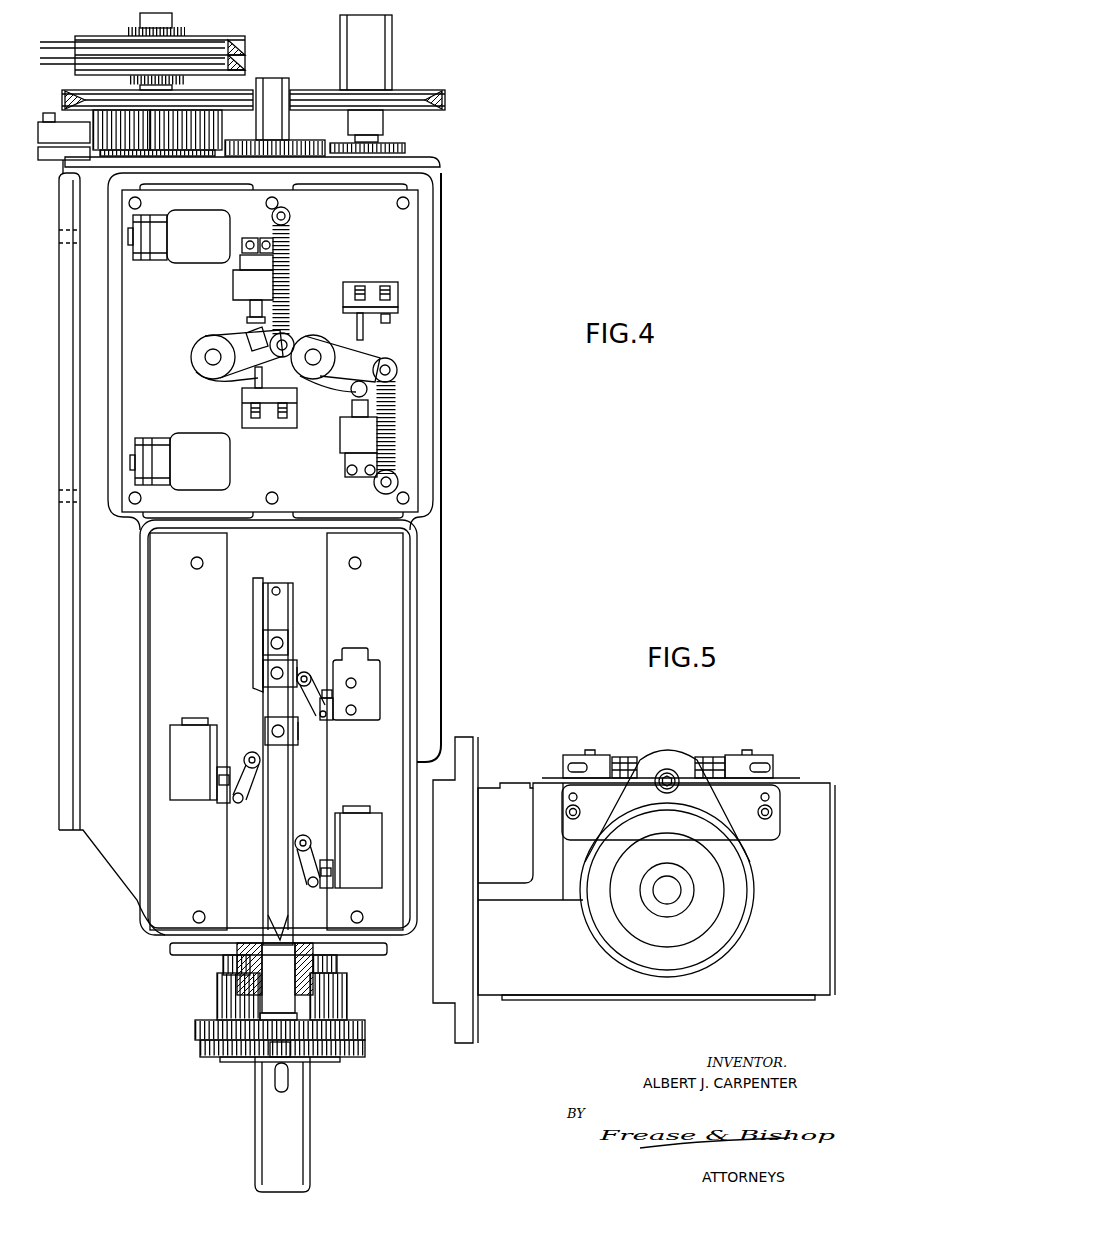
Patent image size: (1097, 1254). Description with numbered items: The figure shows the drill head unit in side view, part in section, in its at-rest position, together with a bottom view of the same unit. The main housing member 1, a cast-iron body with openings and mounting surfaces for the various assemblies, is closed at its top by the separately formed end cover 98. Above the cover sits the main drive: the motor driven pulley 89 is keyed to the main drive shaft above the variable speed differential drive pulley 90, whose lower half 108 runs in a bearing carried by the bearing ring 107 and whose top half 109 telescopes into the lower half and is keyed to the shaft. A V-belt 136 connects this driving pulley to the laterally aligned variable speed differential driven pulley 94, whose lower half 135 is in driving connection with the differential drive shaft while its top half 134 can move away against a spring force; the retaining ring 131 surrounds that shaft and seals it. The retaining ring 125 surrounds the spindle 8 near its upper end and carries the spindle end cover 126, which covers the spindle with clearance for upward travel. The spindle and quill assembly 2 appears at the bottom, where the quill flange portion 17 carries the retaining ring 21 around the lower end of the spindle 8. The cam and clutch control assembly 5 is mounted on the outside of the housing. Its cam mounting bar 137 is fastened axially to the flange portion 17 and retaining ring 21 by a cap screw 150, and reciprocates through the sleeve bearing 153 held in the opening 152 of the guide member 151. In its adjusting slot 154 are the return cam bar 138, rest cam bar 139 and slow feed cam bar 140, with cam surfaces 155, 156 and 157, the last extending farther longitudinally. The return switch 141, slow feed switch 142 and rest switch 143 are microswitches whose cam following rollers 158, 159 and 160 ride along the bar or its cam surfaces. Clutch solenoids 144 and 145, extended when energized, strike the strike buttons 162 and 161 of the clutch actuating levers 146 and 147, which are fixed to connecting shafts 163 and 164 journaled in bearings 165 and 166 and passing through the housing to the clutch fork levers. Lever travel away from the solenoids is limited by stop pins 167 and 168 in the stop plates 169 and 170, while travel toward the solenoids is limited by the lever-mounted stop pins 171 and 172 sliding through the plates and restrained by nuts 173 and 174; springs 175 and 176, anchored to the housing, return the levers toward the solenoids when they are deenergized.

In FIG. 4, the main housing member 1 is at (450, 296).
In FIG. 5, the main housing member 1 is at (568, 1004).
In FIG. 4, the spindle and quill assembly 2 is at (373, 1043).
In FIG. 4, the cam and clutch control assembly 5 is at (395, 545).
In FIG. 5, the cam and clutch control assembly 5 is at (621, 752).
In FIG. 4, the spindle 8 is at (300, 1110).
In FIG. 4, the flange portion 17 is at (365, 1028).
In FIG. 5, the flange portion 17 is at (750, 920).
In FIG. 4, the retaining ring 21 is at (202, 1047).
In FIG. 5, the retaining ring 21 is at (687, 963).
In FIG. 4, the motor driven pulley 89 is at (212, 36).
In FIG. 4, the variable speed differential drive pulley 90 is at (62, 100).
In FIG. 4, the variable speed differential driven pulley 94 is at (448, 80).
In FIG. 4, the end cover 98 is at (432, 160).
In FIG. 4, the bearing ring 107 is at (161, 133).
In FIG. 4, the lower half of the variable speed differential driving pulley 108 is at (125, 108).
In FIG. 4, the top half of driving pulley 109 is at (125, 100).
In FIG. 4, the retaining ring 125 is at (292, 146).
In FIG. 4, the spindle end cover 126 is at (271, 82).
In FIG. 4, the retaining ring 131 is at (405, 150).
In FIG. 4, the top half 134 is at (443, 85).
In FIG. 4, the lower half 135 is at (430, 113).
In FIG. 4, the V-belt 136 is at (446, 98).
In FIG. 4, the cam mounting bar 137 is at (283, 958).
In FIG. 4, the return cam bar 138 is at (300, 731).
In FIG. 4, the rest cam bar 139 is at (305, 665).
In FIG. 4, the slow feed cam bar 140 is at (268, 643).
In FIG. 4, the return switch 141 is at (352, 828).
In FIG. 5, the return switch 141 is at (733, 757).
In FIG. 4, the slow feed switch 142 is at (182, 753).
In FIG. 5, the slow feed switch 142 is at (583, 757).
In FIG. 4, the rest switch 143 is at (373, 677).
In FIG. 4, the clutch solenoid 144 is at (251, 277).
In FIG. 4, the clutch solenoid 145 is at (352, 437).
In FIG. 4, the clutch actuating lever 146 is at (245, 340).
In FIG. 4, the clutch actuating lever 147 is at (343, 350).
In FIG. 4, the cap screw 150 is at (273, 1057).
In FIG. 5, the cap screw 150 is at (674, 775).
In FIG. 4, the guide member 151 is at (190, 953).
In FIG. 5, the guide member 151 is at (752, 788).
In FIG. 4, the opening 152 is at (267, 980).
In FIG. 4, the sleeve bearing 153 is at (263, 990).
In FIG. 4, the adjusting slot 154 is at (278, 585).
In FIG. 4, the cam surface 155 is at (299, 741).
In FIG. 4, the cam surface 156 is at (300, 660).
In FIG. 4, the cam surface 157 is at (253, 600).
In FIG. 4, the cam following roller 158 is at (307, 833).
In FIG. 4, the cam following roller 159 is at (249, 751).
In FIG. 4, the cam following roller 160 is at (330, 669).
In FIG. 4, the strike button 161 is at (349, 392).
In FIG. 4, the strike button 162 is at (245, 326).
In FIG. 4, the connecting shaft 163 is at (303, 335).
In FIG. 4, the connecting shaft 164 is at (204, 355).
In FIG. 4, the bearing 165 is at (298, 365).
In FIG. 4, the bearing 166 is at (192, 366).
In FIG. 4, the stop pin 167 is at (287, 385).
In FIG. 4, the stop pin 168 is at (390, 323).
In FIG. 4, the stop plate 169 is at (248, 398).
In FIG. 4, the stop plate 170 is at (350, 307).
In FIG. 4, the stop pin 171 is at (240, 381).
In FIG. 4, the stop pin 172 is at (377, 338).
In FIG. 4, the nut 173 is at (244, 408).
In FIG. 4, the nut 174 is at (367, 283).
In FIG. 4, the spring 175 is at (284, 248).
In FIG. 4, the spring 176 is at (392, 425).